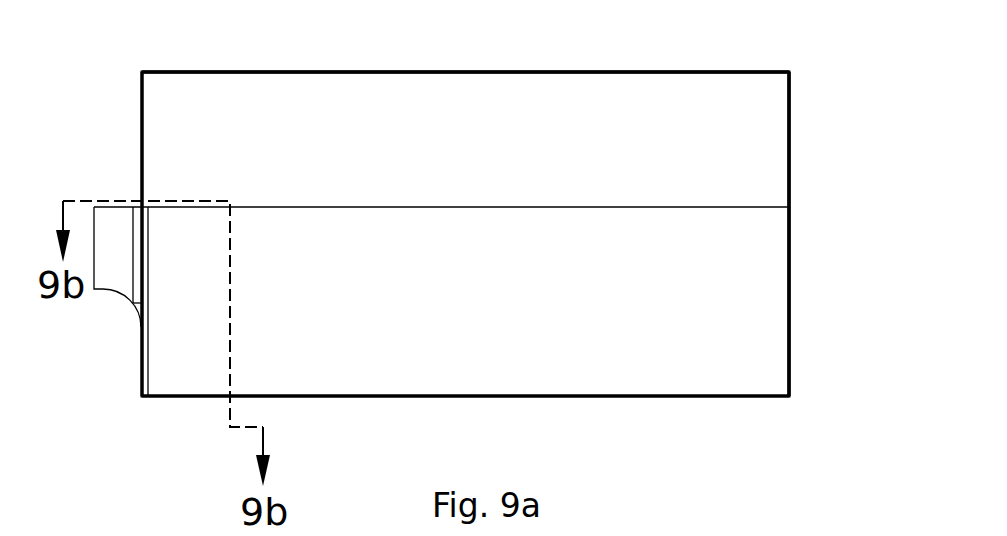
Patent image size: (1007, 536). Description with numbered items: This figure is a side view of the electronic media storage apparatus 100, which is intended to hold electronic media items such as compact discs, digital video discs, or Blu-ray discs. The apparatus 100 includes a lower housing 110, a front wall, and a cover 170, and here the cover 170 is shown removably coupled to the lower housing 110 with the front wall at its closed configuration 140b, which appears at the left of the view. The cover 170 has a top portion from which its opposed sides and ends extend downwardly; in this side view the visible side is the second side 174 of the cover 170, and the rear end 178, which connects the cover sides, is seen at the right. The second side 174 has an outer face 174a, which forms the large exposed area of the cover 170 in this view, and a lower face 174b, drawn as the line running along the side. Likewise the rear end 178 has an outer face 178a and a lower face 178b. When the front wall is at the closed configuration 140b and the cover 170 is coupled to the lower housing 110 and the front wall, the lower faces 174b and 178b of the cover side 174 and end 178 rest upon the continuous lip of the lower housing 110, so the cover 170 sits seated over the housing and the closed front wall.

The electronic media storage apparatus 100 is at (719, 437).
The lower housing 110 is at (612, 412).
The closed configuration 140b is at (117, 382).
The cover 170 is at (126, 104).
The second side 174 is at (173, 148).
The outer face of second side 174a is at (493, 138).
The lower face of second side 174b is at (446, 208).
The rear end 178 is at (790, 126).
The outer face of rear end 178a is at (790, 167).
The lower face of rear end 178b is at (789, 208).